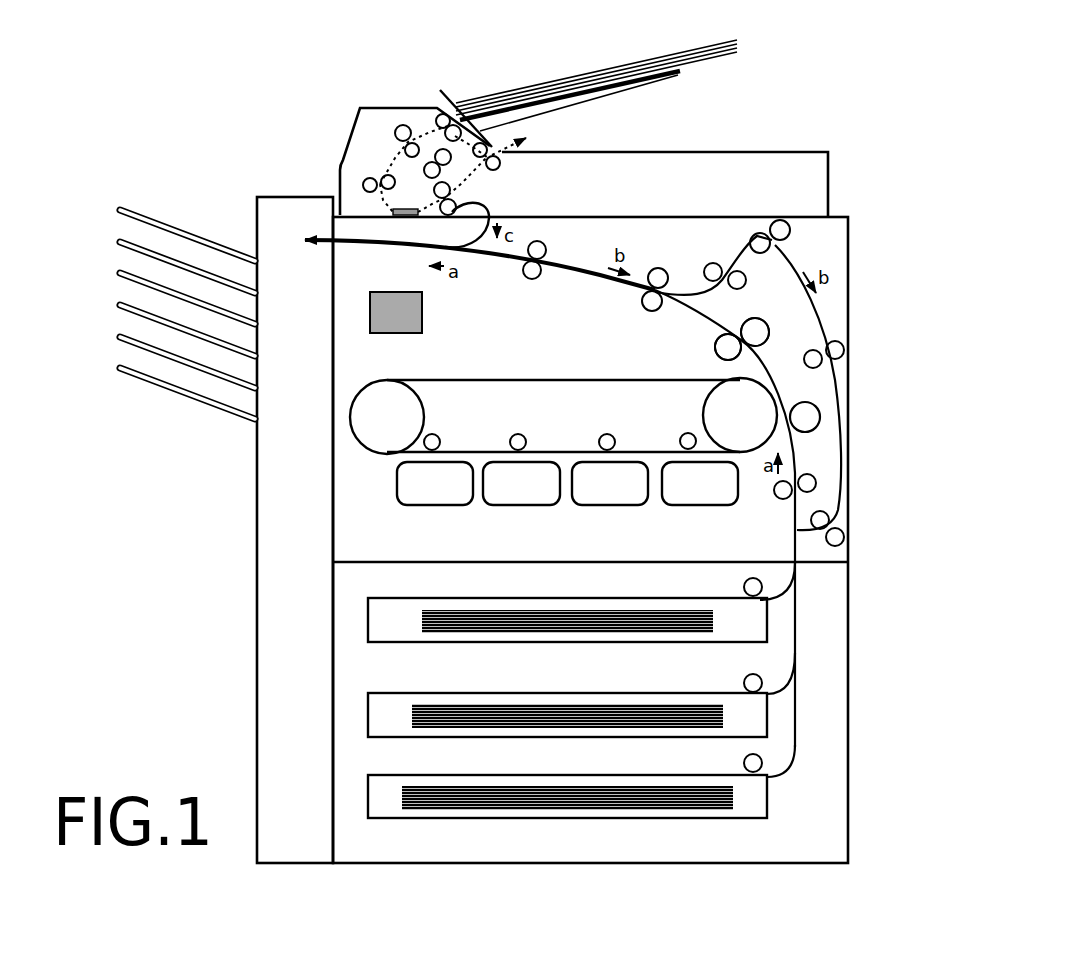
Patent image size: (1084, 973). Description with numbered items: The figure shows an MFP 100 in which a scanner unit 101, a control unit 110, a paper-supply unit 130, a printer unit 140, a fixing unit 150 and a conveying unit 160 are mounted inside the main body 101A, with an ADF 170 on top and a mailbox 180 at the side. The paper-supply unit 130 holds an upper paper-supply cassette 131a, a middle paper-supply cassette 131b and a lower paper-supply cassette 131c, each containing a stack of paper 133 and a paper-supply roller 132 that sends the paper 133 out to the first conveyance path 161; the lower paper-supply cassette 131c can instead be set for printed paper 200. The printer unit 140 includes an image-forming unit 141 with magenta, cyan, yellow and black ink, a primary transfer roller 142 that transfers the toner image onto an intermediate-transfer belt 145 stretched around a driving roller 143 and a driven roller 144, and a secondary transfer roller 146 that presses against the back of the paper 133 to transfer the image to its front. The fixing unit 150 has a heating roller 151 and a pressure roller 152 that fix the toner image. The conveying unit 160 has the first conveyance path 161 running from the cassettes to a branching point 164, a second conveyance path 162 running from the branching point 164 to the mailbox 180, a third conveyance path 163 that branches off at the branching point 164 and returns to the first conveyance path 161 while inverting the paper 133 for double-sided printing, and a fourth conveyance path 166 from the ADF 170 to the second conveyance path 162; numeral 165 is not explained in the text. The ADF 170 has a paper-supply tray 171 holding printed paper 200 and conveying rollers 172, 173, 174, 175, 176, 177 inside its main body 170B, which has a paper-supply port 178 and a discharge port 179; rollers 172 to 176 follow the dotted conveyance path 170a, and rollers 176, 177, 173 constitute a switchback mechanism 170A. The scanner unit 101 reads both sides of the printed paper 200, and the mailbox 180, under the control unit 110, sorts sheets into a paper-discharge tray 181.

The MFP 100 is at (810, 72).
The scanner unit 101 is at (392, 210).
The main body 101A is at (848, 217).
The control unit 110 is at (427, 313).
The paper-supply unit 130 is at (903, 568).
The upper paper-supply cassette 131a is at (368, 643).
The middle paper-supply cassette 131b is at (368, 738).
The lower paper-supply cassette 131c is at (368, 819).
The paper-supply roller 132 is at (743, 587).
The paper 133 is at (610, 701).
The printer unit 140 is at (903, 348).
The image-forming unit 141 is at (738, 514).
The primary transfer roller 142 is at (690, 421).
The driving roller 143 is at (740, 415).
The driven roller 144 is at (387, 417).
The intermediate-transfer belt 145 is at (450, 376).
The secondary transfer roller 146 is at (820, 415).
The fixing unit 150 is at (712, 330).
The heating roller 151 is at (713, 353).
The pressure roller 152 is at (757, 320).
The conveying unit 160 is at (688, 265).
The first conveyance path 161 is at (801, 605).
The second conveyance path 162 is at (581, 257).
The third conveyance path 163 is at (822, 309).
The branching point 164 is at (632, 293).
The discharge rollers 165 is at (517, 268).
The fourth conveyance path 166 is at (492, 211).
The ADF 170 is at (485, 92).
The switchback mechanism 170A is at (387, 138).
The conveyance path of printed paper 170a is at (387, 158).
The main body of ADF 170B is at (830, 150).
The paper-supply tray 171 is at (610, 97).
The conveying roller 172 is at (437, 115).
The conveying roller 173 is at (398, 126).
The conveying roller 174 is at (363, 178).
The conveying roller 175 is at (448, 219).
The conveying roller 176 is at (500, 168).
The conveying roller 177 is at (452, 165).
The paper-supply port 178 is at (457, 109).
The discharge port 179 is at (501, 162).
The mailbox 180 is at (257, 197).
The paper-discharge tray 181 is at (98, 208).
The printed paper 200 is at (699, 49).